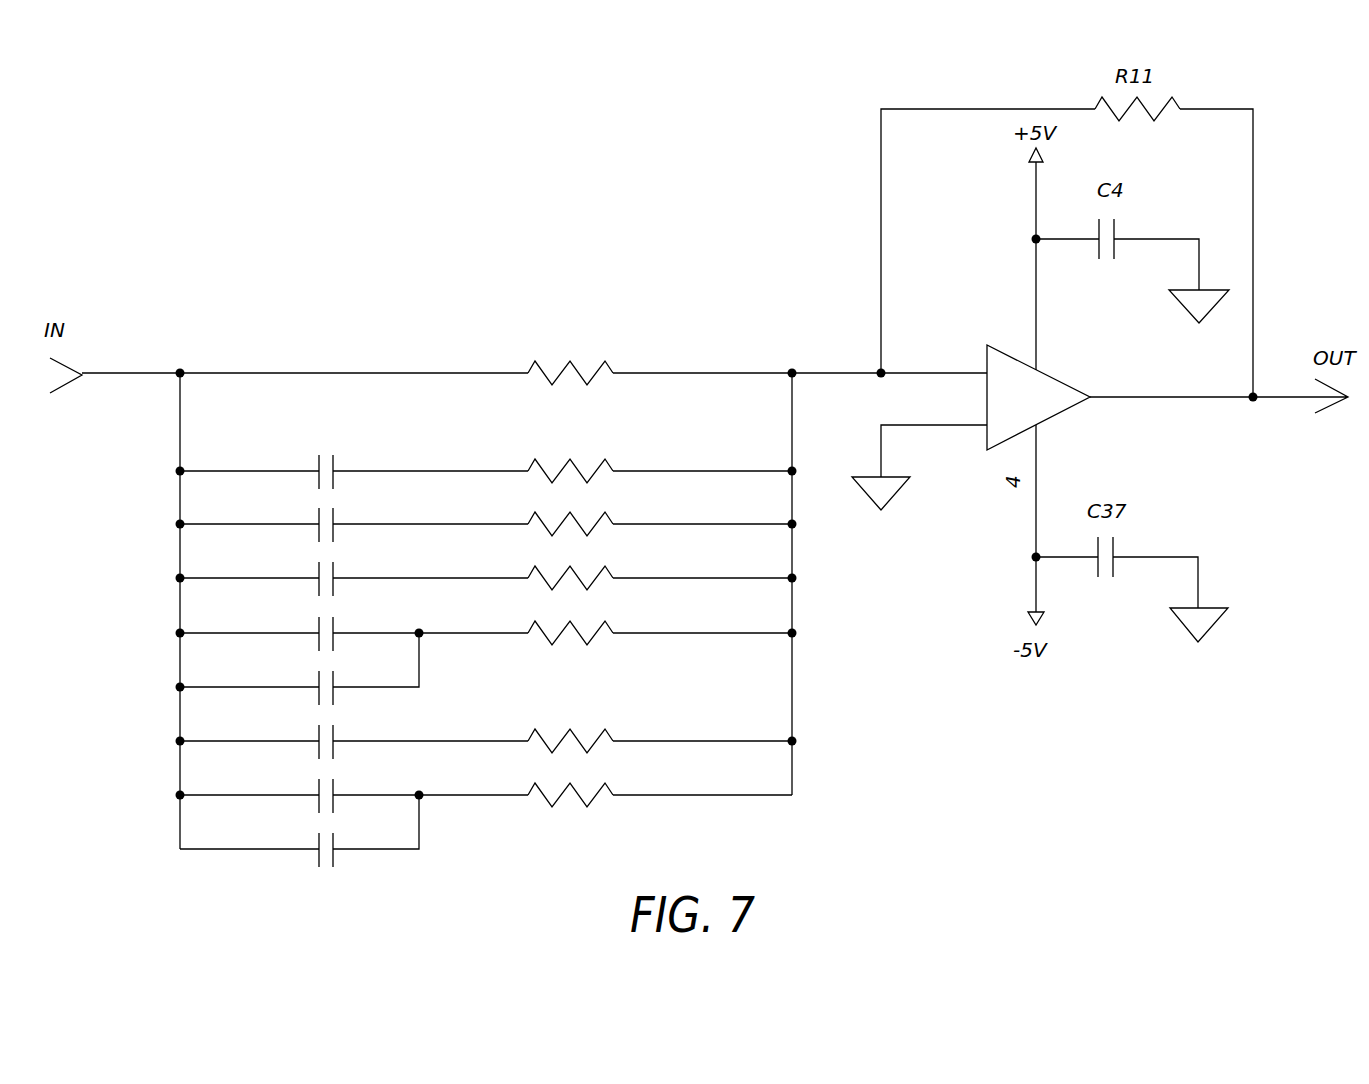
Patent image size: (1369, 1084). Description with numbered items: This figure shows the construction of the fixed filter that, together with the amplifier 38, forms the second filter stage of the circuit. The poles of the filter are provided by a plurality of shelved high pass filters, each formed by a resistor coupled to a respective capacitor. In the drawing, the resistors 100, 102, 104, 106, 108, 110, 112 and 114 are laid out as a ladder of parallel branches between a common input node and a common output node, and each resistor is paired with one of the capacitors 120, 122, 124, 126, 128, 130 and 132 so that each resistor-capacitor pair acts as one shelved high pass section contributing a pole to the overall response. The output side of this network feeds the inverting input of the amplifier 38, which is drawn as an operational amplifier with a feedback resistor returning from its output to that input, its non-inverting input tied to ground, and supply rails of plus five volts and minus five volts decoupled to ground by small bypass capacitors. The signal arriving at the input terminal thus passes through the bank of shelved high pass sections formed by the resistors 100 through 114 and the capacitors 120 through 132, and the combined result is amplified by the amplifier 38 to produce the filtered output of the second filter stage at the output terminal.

The resistor 100 is at (304, 499).
The resistor 102 is at (304, 552).
The resistor 104 is at (304, 606).
The resistor 106 is at (304, 661).
The resistor 108 is at (304, 715).
The resistor 110 is at (304, 769).
The resistor 112 is at (304, 823).
The resistor 114 is at (307, 863).
The capacitor 120 is at (589, 363).
The capacitor 122 is at (589, 461).
The capacitor 124 is at (589, 514).
The capacitor 126 is at (589, 568).
The capacitor 128 is at (589, 623).
The capacitor 130 is at (589, 731).
The capacitor 132 is at (589, 785).
The amplifier 38 is at (1058, 429).